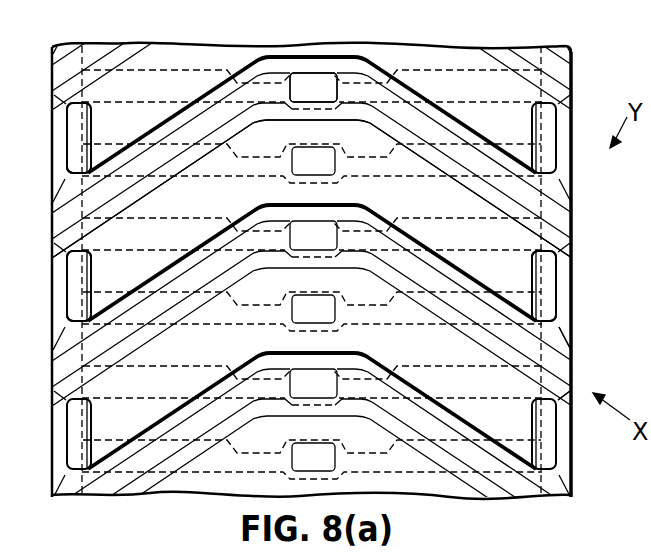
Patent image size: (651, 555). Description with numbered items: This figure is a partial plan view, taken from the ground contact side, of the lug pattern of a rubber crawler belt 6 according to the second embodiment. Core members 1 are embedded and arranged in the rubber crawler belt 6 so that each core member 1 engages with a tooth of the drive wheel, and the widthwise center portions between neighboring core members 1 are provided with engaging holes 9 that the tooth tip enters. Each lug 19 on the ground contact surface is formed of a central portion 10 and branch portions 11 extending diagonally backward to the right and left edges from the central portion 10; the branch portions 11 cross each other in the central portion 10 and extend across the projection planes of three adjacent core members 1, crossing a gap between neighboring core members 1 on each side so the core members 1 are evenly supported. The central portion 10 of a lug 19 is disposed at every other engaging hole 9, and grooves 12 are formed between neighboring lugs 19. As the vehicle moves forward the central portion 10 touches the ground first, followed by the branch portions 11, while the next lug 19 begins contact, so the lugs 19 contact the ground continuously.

The core member 1 is at (83, 183).
The rubber crawler belt 6 is at (574, 79).
The engaging hole 9 is at (333, 90).
The central portion 10 is at (317, 127).
The branch portion 11 is at (83, 257).
The groove 12 is at (573, 363).
The lug 19 is at (423, 46).